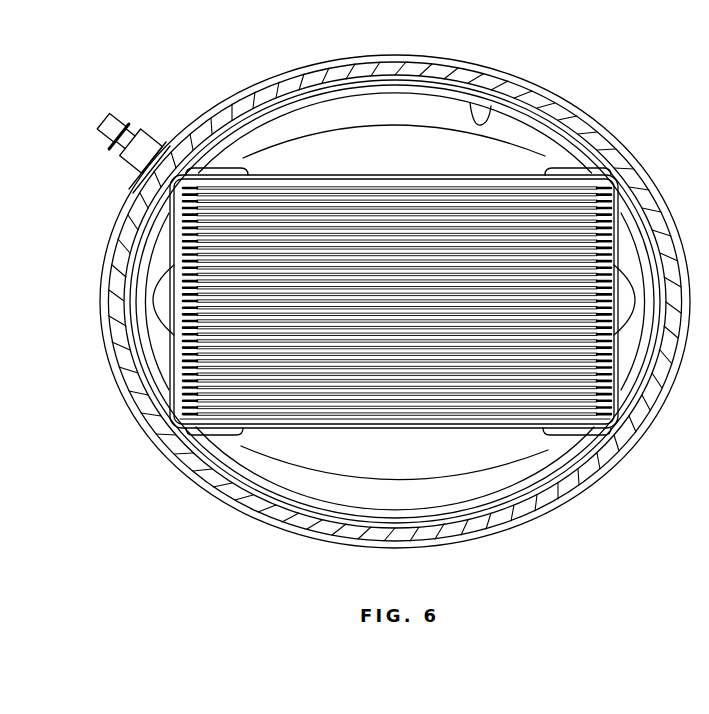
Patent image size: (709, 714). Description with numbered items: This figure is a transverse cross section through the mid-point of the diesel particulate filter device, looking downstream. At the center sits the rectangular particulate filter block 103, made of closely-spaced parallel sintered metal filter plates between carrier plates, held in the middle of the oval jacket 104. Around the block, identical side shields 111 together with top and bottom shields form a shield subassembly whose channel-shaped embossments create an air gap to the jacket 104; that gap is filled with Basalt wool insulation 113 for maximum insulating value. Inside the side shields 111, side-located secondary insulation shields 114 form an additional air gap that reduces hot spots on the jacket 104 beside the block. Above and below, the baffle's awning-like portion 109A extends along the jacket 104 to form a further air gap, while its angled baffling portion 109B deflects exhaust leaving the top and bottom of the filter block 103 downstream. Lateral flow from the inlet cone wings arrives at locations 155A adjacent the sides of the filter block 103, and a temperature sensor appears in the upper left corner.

The particulate filter block 103 is at (487, 197).
The jacket 104 is at (590, 116).
The awning-like portion 109A is at (473, 110).
The angled baffling portion 109B is at (413, 155).
The side shield 111 is at (130, 375).
The Basalt wool insulation 113 is at (112, 271).
The secondary insulation shield 114 is at (150, 329).
The locations adjacent the sides of the filter block 155A is at (150, 237).